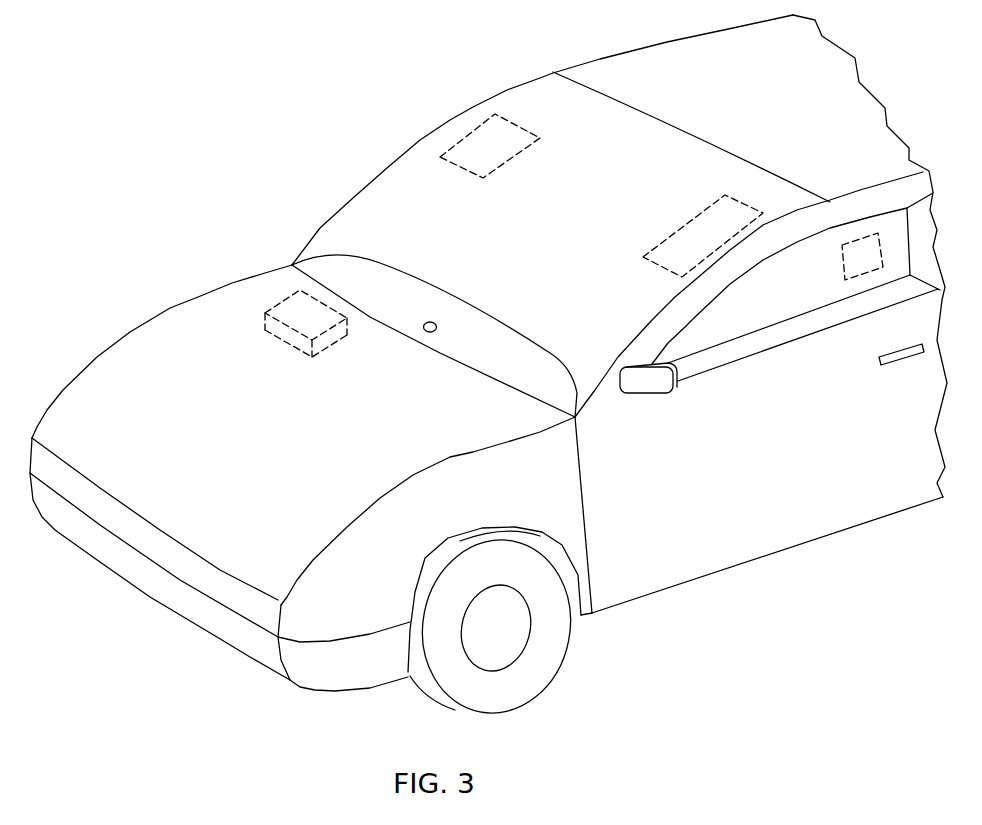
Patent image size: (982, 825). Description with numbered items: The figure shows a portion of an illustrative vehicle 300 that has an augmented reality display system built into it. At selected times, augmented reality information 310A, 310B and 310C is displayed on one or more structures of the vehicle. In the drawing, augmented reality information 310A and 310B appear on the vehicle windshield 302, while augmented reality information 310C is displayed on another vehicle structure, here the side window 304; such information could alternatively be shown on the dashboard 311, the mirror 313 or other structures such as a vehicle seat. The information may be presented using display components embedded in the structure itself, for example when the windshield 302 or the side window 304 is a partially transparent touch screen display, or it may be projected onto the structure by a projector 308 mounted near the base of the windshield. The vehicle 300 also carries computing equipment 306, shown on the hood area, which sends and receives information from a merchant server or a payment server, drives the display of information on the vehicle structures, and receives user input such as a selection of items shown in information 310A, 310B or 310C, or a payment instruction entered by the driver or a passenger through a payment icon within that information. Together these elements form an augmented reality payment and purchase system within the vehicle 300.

The vehicle 300 is at (410, 90).
The vehicle windshield 302 is at (571, 236).
The side window 304 is at (816, 291).
The computing equipment 306 is at (330, 340).
The projector 308 is at (433, 321).
The augmented reality information 310A is at (530, 143).
The augmented reality information 310B is at (720, 198).
The augmented reality information 310C is at (866, 238).
The dashboard 311 is at (377, 279).
The mirror 313 is at (662, 383).